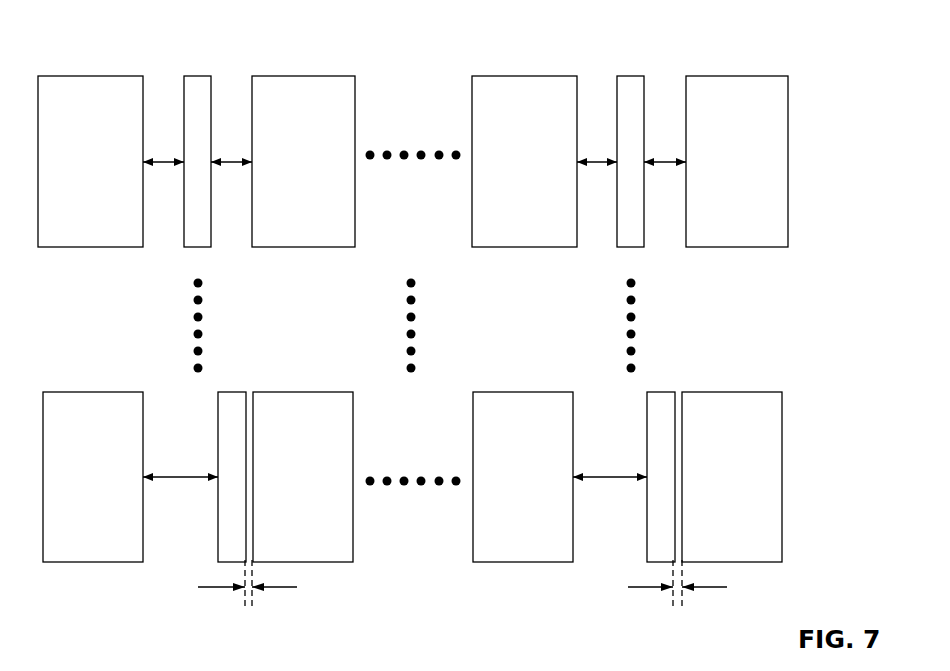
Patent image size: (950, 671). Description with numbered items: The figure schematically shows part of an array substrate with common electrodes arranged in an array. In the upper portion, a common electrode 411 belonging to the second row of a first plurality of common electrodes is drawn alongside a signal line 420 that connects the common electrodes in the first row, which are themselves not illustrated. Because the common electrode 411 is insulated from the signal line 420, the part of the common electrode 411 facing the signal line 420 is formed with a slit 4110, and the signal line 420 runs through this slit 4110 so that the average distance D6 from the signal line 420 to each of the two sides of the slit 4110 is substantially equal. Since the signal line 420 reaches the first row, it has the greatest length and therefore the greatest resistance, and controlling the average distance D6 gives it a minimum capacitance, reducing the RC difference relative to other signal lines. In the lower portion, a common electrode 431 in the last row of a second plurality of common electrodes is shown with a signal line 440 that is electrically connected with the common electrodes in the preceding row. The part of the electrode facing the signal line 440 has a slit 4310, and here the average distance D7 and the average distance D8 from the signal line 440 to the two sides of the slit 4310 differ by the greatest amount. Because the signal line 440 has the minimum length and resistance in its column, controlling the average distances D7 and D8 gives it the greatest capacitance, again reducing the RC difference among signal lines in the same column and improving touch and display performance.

The common electrode 411 is at (60, 103).
The slit 4110 is at (160, 77).
The signal line 420 is at (190, 232).
The common electrode 431 is at (79, 423).
The signal line 440 is at (228, 408).
The slit 4310 is at (164, 562).
The average distance D6 is at (414, 148).
The average distance D7 is at (395, 492).
The average distance D8 is at (462, 600).